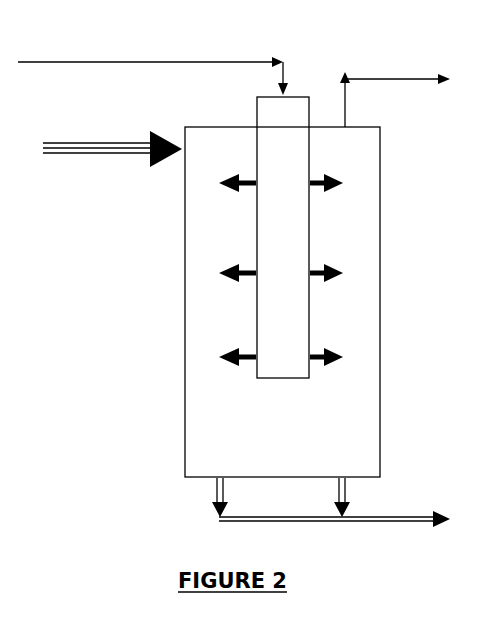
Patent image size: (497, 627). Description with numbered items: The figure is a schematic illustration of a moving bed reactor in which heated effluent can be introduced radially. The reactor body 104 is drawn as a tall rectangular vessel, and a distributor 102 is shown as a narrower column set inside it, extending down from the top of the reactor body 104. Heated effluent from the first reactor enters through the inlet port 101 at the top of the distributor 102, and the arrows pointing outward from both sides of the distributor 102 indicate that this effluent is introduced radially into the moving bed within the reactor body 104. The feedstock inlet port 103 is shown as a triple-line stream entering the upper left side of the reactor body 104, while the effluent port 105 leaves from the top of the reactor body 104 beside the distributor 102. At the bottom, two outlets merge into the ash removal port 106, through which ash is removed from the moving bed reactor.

The inlet port 101 is at (153, 64).
The distributor 102 is at (309, 236).
The feedstock inlet port 103 is at (104, 161).
The reactor body 104 is at (282, 302).
The effluent port 105 is at (395, 88).
The ash removal port 106 is at (331, 516).